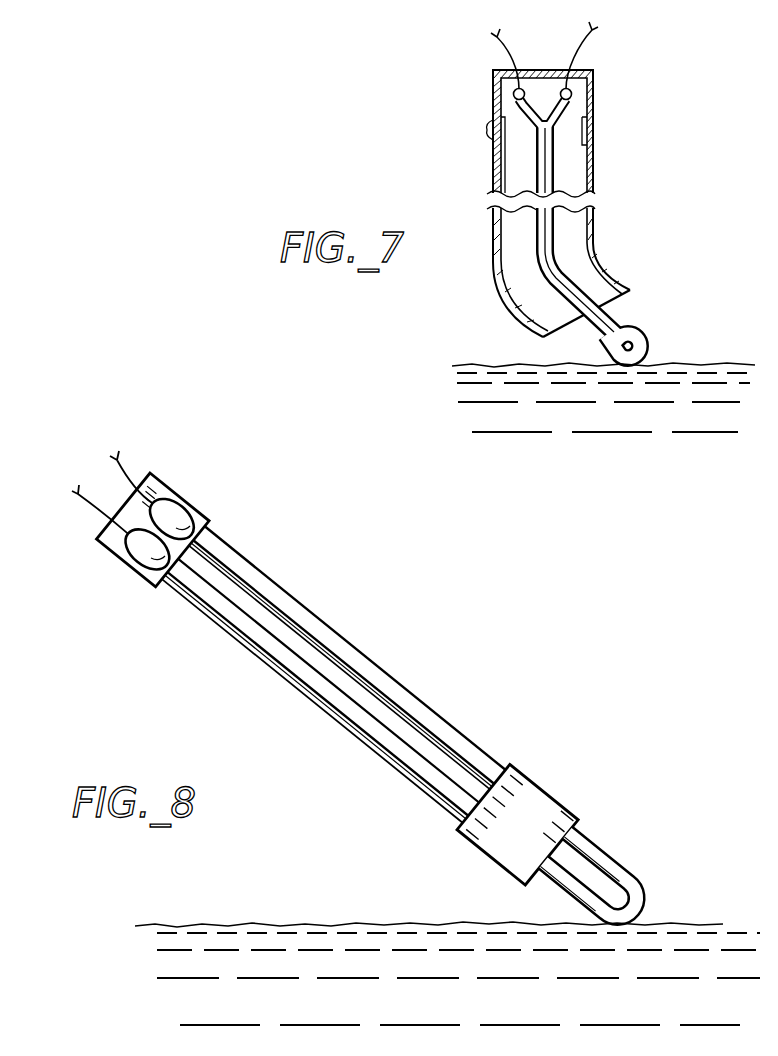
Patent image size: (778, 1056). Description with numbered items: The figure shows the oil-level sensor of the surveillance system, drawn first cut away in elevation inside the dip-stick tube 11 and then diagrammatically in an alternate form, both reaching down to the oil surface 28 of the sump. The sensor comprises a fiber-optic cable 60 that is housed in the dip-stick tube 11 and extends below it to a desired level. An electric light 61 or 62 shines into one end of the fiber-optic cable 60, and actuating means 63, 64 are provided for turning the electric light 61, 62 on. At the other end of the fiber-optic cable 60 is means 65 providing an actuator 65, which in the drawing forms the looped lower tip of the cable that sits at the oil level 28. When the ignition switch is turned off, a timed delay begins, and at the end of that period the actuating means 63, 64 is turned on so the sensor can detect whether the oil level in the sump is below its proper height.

In FIG. 7, the dip-stick tube 11 is at (503, 157).
In FIG. 7, the water surface 28 is at (497, 383).
In FIG. 8, the water surface 28 is at (335, 950).
In FIG. 7, the fiber-optic cable 60 is at (548, 172).
In FIG. 8, the fiber-optic cable 60 is at (360, 657).
In FIG. 7, the electric light 61 is at (512, 91).
In FIG. 8, the electric light 61 is at (134, 566).
In FIG. 7, the electric light 62 is at (573, 91).
In FIG. 8, the electric light 62 is at (182, 518).
In FIG. 7, the actuating means 63 is at (508, 44).
In FIG. 8, the actuating means 63 is at (95, 504).
In FIG. 7, the actuating means 64 is at (584, 46).
In FIG. 8, the actuating means 64 is at (120, 466).
In FIG. 7, the actuator 65 is at (647, 335).
In FIG. 8, the actuator 65 is at (620, 876).